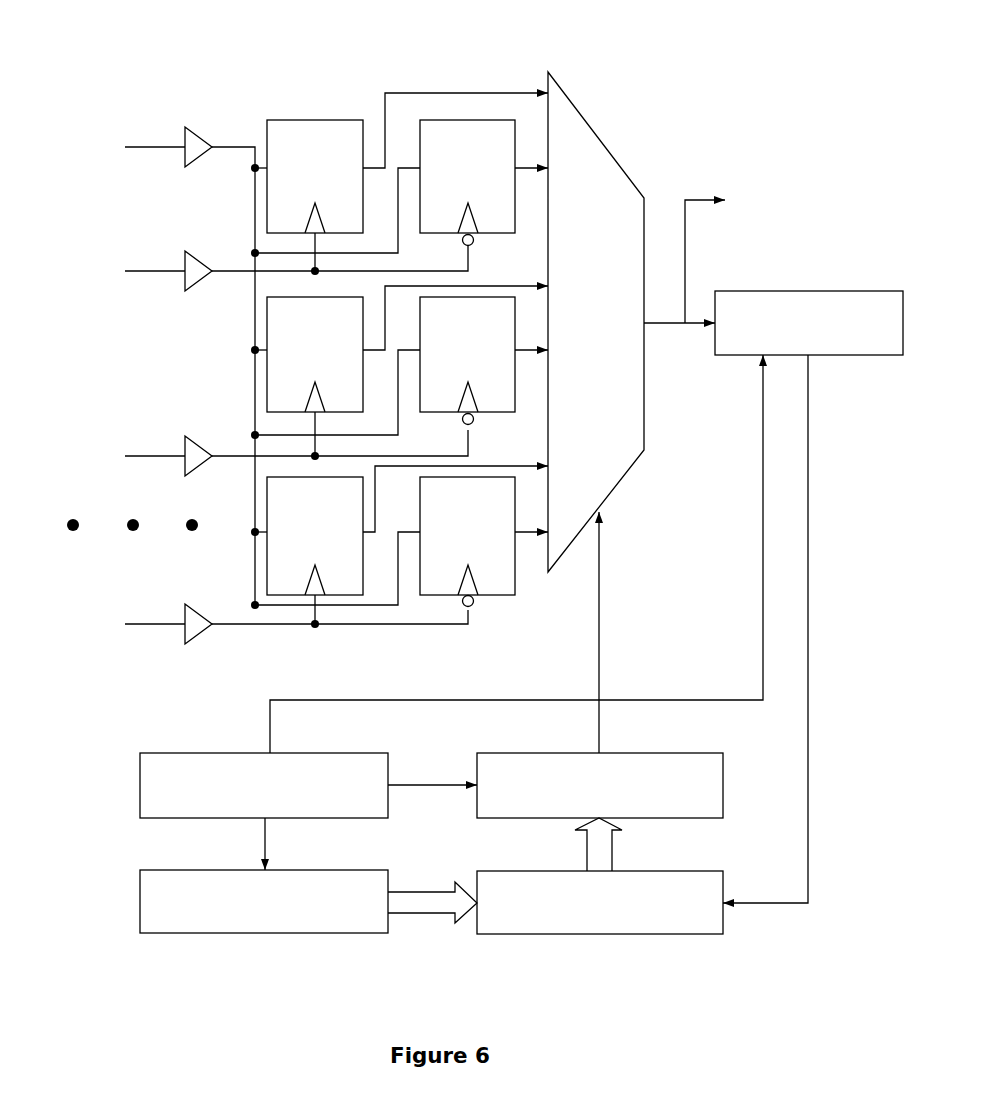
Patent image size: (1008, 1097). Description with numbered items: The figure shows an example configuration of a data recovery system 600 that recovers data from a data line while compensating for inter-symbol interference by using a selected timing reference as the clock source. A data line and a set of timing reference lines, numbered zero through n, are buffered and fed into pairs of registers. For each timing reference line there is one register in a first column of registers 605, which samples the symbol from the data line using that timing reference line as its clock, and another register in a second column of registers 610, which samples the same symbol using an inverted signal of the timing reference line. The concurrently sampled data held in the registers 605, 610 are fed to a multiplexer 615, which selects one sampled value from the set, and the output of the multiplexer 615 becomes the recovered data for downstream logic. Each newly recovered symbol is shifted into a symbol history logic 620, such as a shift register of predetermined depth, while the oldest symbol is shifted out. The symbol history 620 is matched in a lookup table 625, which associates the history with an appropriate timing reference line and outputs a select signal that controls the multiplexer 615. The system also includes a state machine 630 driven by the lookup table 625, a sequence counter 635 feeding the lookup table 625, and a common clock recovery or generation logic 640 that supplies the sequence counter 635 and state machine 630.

The data recovery system 600 is at (752, 52).
The column of registers 605 is at (302, 93).
The column of registers 610 is at (478, 82).
The multiplexer 615 is at (596, 322).
The symbol history logic 620 is at (808, 291).
The lookup table 625 is at (598, 934).
The state machine 630 is at (723, 787).
The sequence counter 635 is at (140, 903).
The common clock recovery or generation logic 640 is at (140, 785).